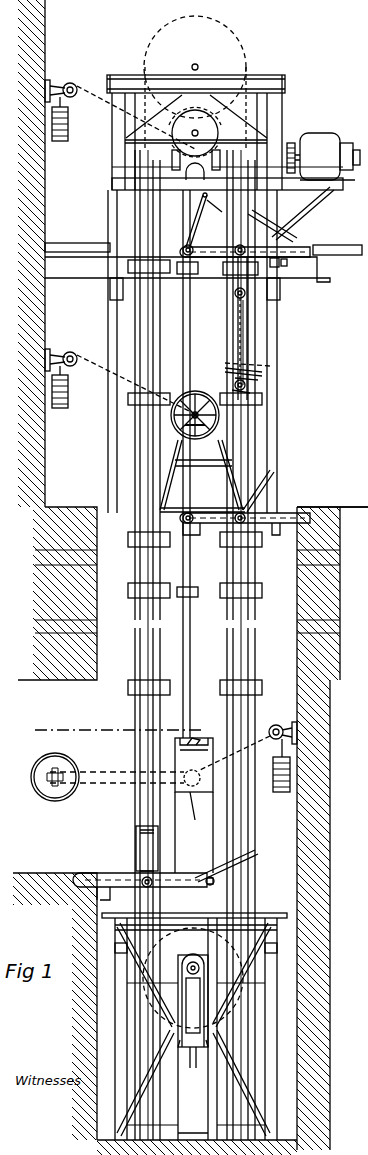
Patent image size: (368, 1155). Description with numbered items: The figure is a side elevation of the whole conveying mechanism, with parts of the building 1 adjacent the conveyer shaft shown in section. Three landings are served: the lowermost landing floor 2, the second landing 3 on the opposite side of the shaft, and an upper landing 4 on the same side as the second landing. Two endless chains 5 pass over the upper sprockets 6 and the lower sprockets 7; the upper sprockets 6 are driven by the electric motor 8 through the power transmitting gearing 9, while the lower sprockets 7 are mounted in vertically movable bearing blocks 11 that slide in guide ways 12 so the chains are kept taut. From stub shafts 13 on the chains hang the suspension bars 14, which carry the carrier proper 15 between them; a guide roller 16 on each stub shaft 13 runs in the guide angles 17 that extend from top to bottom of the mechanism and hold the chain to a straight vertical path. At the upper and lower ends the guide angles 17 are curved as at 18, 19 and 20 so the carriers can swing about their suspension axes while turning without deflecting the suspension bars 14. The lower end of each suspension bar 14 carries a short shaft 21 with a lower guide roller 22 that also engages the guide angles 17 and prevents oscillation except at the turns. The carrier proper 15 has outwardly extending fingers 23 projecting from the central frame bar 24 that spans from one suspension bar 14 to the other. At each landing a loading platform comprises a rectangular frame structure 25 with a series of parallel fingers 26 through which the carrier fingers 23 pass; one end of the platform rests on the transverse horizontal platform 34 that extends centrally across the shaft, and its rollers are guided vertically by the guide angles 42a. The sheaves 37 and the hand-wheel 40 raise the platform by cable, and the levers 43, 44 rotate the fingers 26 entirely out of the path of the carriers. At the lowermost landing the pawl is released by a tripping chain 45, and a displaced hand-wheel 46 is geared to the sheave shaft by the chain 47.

The parts of the building 1 is at (35, 445).
The lowermost landing floor 2 is at (50, 885).
The second landing 3 is at (342, 507).
The upper landing 4 is at (349, 250).
The endless chains 5 is at (135, 551).
The upper sprockets 6 is at (238, 48).
The lower sprockets 7 is at (158, 1008).
The electric motor 8 is at (330, 141).
The power transmitting gearing 9 is at (292, 143).
The bearing blocks 11 is at (180, 1062).
The guide ways 12 is at (215, 1090).
The stub shaft 13 is at (248, 297).
The suspension bars 14 is at (245, 346).
The carrier proper 15 is at (258, 380).
The guide roller 16 is at (238, 302).
The guide angles 17 is at (160, 450).
The curved upper end of guide angles 18 is at (141, 78).
The curved end of guide angles 19 is at (258, 76).
The curved end of guide angles 20 is at (200, 114).
The short shaft 21 is at (258, 386).
The lower guide roller 22 is at (248, 393).
The carrier fingers 23 is at (272, 364).
The central frame bar 24 is at (265, 379).
The rectangular frame structure 25 is at (205, 243).
The platform fingers 26 is at (235, 293).
The transverse horizontal platform 34 is at (183, 276).
The cable sheaves 37 is at (178, 183).
The hand-wheel 40 is at (172, 418).
The vertical guide angles 42a is at (136, 840).
The lever 43 is at (280, 224).
The lever 44 is at (208, 212).
The tripping chain 45 is at (105, 728).
The hand-wheel 46 is at (55, 801).
The chain 47 is at (126, 771).